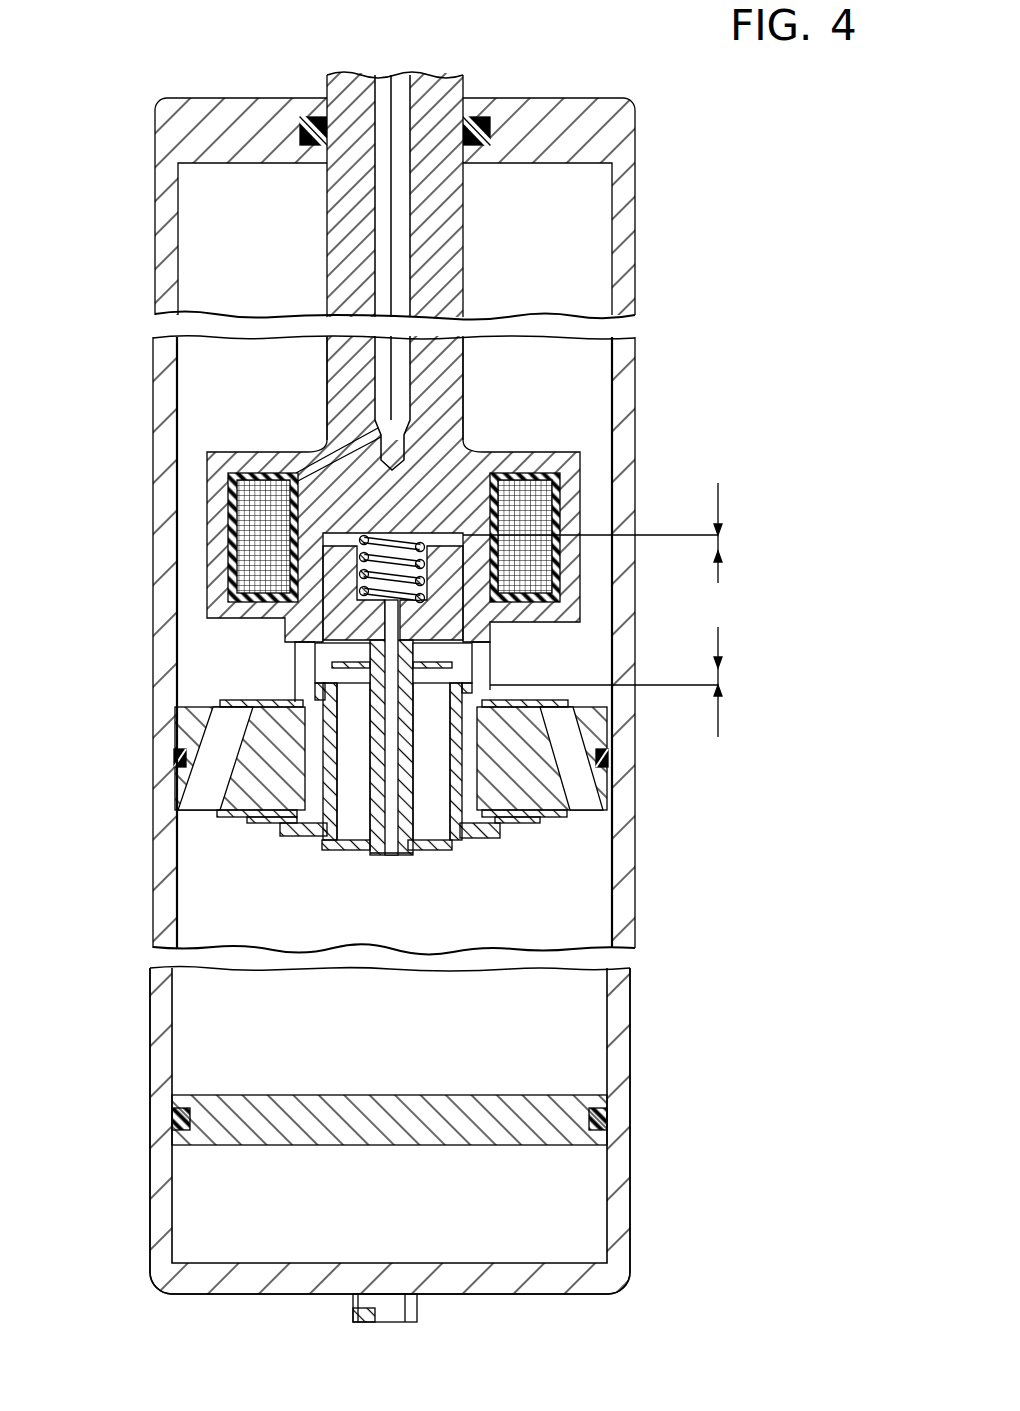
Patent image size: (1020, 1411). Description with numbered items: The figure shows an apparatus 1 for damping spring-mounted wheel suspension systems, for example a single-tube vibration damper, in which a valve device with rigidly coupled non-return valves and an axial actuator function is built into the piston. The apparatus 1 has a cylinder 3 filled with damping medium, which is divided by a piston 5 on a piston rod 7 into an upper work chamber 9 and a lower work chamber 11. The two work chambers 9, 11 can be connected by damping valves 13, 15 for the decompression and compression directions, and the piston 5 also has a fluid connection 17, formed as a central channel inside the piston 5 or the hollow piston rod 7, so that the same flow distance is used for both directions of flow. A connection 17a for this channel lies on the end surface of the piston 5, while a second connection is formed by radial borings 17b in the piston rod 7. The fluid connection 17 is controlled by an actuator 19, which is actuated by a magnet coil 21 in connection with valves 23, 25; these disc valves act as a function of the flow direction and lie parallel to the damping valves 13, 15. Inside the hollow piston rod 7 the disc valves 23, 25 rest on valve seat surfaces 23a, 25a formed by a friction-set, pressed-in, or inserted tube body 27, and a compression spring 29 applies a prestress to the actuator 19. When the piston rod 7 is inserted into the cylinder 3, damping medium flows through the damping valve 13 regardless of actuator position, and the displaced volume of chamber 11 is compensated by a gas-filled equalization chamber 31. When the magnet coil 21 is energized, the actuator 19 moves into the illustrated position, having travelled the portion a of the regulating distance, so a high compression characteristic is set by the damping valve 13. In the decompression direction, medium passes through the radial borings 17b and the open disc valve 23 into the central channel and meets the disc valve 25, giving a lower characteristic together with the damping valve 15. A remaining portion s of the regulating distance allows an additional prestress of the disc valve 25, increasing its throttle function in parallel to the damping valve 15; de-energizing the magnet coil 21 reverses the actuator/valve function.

The apparatus for damping spring-mounted wheel suspension systems 1 is at (690, 1113).
The cylinder 3 is at (620, 620).
The piston 5 is at (597, 788).
The piston rod 7 is at (438, 90).
The upper work chamber 9 is at (578, 188).
The lower work chamber 11 is at (568, 1040).
The damping valve 13 is at (217, 705).
The damping valve 15 is at (552, 822).
The fluid connection 17 is at (432, 823).
The connection 17a is at (462, 848).
The radial borings 17b is at (302, 653).
The actuator 19 is at (366, 808).
The magnet coil 21 is at (537, 495).
The disc valve 23 is at (718, 668).
The valve seat surface 23a is at (298, 695).
The disc valve 25 is at (442, 850).
The valve seat surface 25a is at (322, 838).
The tube body 27 is at (238, 818).
The compression spring 29 is at (718, 551).
The gas-filled equalization chamber 31 is at (557, 1230).
The portion of the valve regulating distance s is at (720, 541).
The portion of the regulating distance a is at (720, 677).